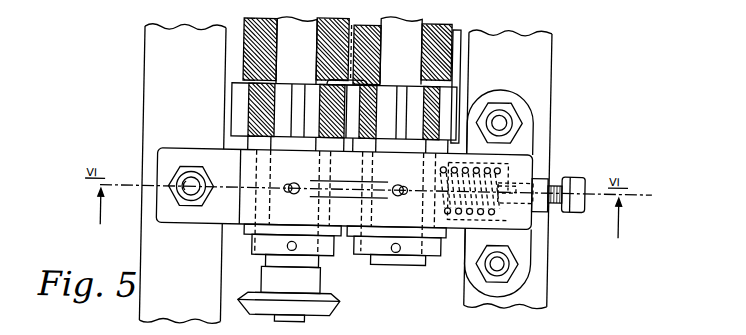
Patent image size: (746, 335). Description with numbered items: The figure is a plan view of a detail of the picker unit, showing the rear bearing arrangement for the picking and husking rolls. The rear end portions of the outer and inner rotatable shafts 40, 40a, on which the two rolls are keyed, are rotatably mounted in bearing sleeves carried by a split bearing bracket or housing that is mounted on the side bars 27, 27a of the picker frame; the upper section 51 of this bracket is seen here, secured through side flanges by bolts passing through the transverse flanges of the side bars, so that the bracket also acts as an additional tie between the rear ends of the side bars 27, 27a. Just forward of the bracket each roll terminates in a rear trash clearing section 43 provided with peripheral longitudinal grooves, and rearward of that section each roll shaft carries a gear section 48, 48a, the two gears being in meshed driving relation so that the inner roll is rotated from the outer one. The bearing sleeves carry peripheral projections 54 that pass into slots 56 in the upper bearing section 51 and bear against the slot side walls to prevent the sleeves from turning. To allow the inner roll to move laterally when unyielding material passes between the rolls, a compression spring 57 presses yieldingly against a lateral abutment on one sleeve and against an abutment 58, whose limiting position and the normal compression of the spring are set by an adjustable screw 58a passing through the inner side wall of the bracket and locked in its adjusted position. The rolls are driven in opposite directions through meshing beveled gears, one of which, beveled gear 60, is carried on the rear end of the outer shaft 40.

The side bar 27 is at (143, 106).
The side bar 27a is at (548, 88).
The outer rotatable shaft 40 is at (282, 17).
The inner rotatable shaft 40a is at (417, 13).
The rear trash clearing section 43 is at (353, 17).
The gear section 48 is at (230, 100).
The gear section 48a is at (449, 95).
The upper section of bearing bracket 51 is at (250, 224).
The peripheral projection 54 is at (296, 181).
The slot 56 is at (289, 190).
The compression spring 57 is at (444, 230).
The abutment 58 is at (500, 207).
The adjustable screw 58a is at (553, 176).
The beveled gear 60 is at (336, 305).